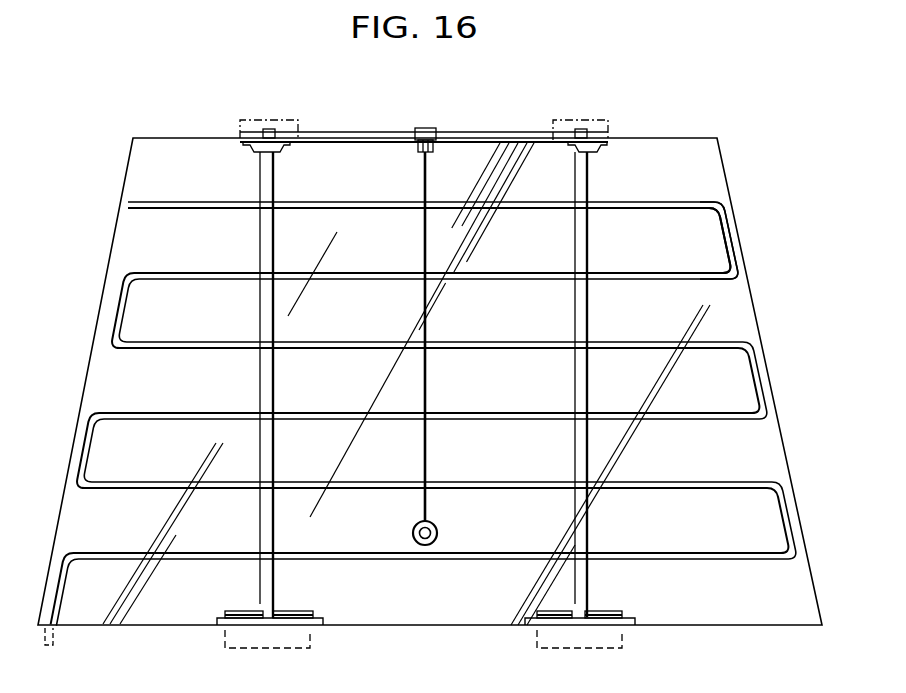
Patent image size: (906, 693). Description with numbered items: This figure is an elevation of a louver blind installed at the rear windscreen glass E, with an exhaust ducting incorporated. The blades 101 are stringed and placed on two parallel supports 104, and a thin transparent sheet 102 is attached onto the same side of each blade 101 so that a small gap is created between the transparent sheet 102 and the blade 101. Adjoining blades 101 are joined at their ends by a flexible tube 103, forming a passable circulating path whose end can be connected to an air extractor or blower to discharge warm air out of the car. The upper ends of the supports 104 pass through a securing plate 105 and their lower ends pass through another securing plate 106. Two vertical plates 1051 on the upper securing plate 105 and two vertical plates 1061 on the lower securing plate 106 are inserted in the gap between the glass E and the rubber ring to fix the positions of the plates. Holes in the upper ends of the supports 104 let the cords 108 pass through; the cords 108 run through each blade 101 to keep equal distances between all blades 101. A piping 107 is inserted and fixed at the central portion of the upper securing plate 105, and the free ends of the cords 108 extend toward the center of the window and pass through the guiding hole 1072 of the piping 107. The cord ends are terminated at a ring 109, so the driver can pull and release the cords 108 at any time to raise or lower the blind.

The blade 101 is at (677, 207).
The transparent sheet 102 is at (641, 201).
The flexible tube 103 is at (736, 228).
The support 104 is at (586, 577).
The securing plate 105 is at (521, 131).
The vertical plate 1051 is at (570, 121).
The securing plate 106 is at (622, 612).
The vertical plate 1061 is at (620, 646).
The piping 107 is at (417, 129).
The guiding hole 1072 is at (433, 128).
The cord 108 is at (424, 176).
The ring 109 is at (439, 530).
The glass E is at (755, 447).